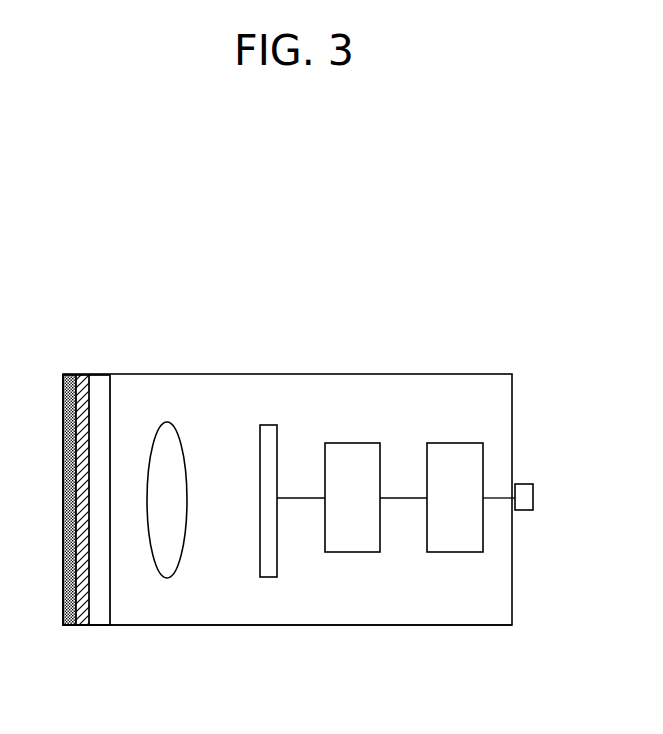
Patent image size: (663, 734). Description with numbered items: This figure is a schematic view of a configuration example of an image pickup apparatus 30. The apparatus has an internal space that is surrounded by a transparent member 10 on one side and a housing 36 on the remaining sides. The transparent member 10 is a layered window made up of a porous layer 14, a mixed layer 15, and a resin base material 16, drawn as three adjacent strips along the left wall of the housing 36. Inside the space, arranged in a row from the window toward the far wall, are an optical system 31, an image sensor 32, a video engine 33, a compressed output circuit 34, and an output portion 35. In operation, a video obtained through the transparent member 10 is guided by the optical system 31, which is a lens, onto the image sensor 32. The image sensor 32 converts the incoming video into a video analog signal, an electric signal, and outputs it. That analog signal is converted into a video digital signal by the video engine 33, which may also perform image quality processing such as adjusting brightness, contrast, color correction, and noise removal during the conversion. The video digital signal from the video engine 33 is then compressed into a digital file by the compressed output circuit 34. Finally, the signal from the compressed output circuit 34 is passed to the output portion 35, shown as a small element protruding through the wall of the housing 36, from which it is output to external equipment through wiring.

The transparent member 10 is at (137, 293).
The porous layer 14 is at (64, 375).
The mixed layer 15 is at (80, 375).
The resin base material 16 is at (101, 375).
The image pickup apparatus 30 is at (386, 280).
The optical system 31 is at (168, 422).
The image sensor 32 is at (268, 425).
The video engine 33 is at (352, 443).
The compressed output circuit 34 is at (456, 443).
The output portion 35 is at (528, 484).
The housing 36 is at (295, 626).